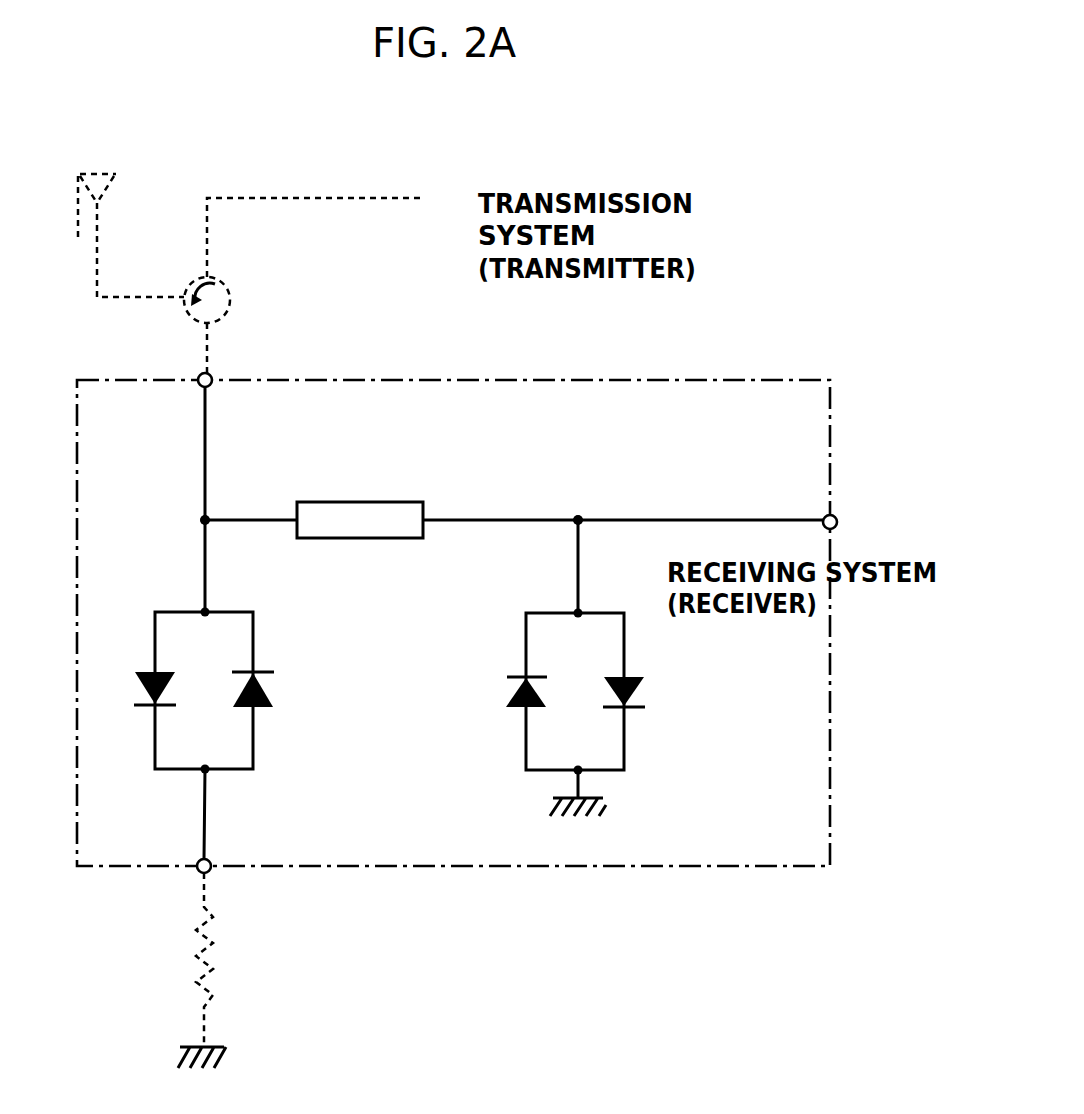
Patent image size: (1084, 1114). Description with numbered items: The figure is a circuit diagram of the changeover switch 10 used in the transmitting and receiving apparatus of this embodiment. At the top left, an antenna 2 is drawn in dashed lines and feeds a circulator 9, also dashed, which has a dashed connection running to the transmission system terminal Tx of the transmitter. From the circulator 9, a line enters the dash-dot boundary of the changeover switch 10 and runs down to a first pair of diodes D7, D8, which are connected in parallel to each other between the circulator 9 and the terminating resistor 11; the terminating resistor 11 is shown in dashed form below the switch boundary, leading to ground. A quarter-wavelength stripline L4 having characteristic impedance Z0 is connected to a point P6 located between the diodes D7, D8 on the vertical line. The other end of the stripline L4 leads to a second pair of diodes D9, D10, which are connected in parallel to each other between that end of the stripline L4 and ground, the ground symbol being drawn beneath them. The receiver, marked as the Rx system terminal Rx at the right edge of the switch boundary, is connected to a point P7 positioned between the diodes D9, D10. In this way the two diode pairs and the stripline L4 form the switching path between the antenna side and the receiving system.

The antenna 2 is at (124, 235).
The circulator 9 is at (232, 287).
The changeover switch 10 is at (774, 336).
The terminating resistor 11 is at (192, 952).
The transmission system terminal Tx is at (336, 230).
The receiver Rx is at (853, 524).
The quarter-wavelength stripline L4 is at (356, 500).
The point P6 is at (204, 520).
The point P7 is at (578, 518).
The diode D7 is at (137, 680).
The diode D8 is at (267, 692).
The diode D9 is at (513, 688).
The diode D10 is at (643, 683).